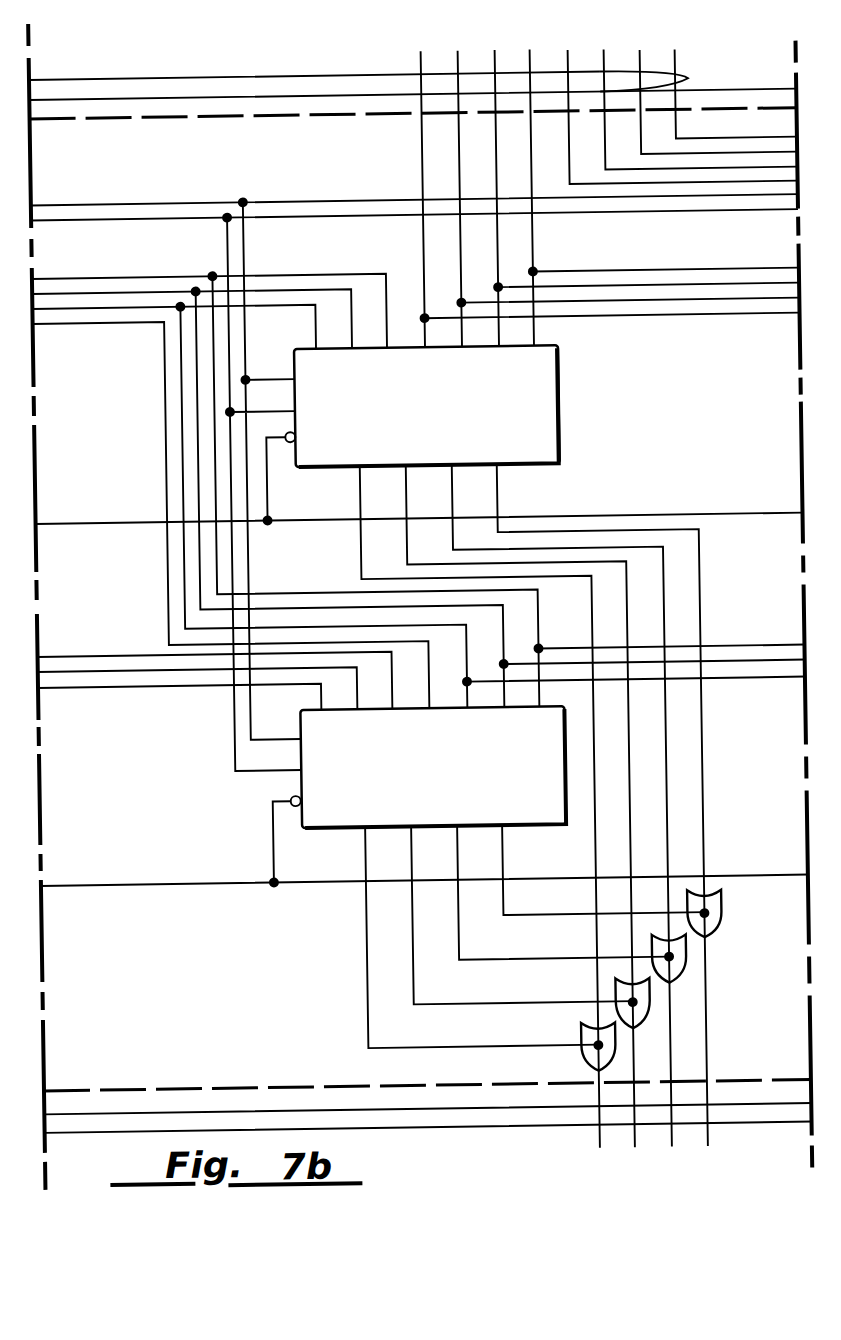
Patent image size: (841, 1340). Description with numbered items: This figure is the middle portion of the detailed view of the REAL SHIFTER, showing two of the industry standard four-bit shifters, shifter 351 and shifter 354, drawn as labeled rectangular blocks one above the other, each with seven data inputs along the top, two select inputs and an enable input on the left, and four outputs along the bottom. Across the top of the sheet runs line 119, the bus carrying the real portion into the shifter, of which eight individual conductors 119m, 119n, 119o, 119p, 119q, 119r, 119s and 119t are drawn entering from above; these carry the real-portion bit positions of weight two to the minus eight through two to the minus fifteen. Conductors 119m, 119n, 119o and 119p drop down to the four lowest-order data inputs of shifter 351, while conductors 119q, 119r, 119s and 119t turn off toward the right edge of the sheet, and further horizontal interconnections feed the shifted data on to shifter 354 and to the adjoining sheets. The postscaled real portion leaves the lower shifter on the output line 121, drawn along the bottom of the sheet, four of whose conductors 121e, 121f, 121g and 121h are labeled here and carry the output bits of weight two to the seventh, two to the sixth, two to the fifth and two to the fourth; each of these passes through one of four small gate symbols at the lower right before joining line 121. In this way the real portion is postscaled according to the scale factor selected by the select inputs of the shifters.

The line 119 is at (240, 80).
The conductor 119m is at (419, 57).
The conductor 119n is at (456, 57).
The conductor 119o is at (493, 58).
The conductor 119p is at (528, 58).
The conductor 119q is at (566, 59).
The conductor 119r is at (602, 59).
The conductor 119s is at (638, 60).
The conductor 119t is at (673, 60).
The 4-BIT SHIFTER 351 is at (554, 385).
The 4-BIT SHIFTER 354 is at (321, 833).
The conductor 121e is at (376, 1053).
The conductor 121f is at (419, 1010).
The conductor 121g is at (464, 966).
The conductor 121h is at (508, 922).
The line 121 is at (397, 1133).